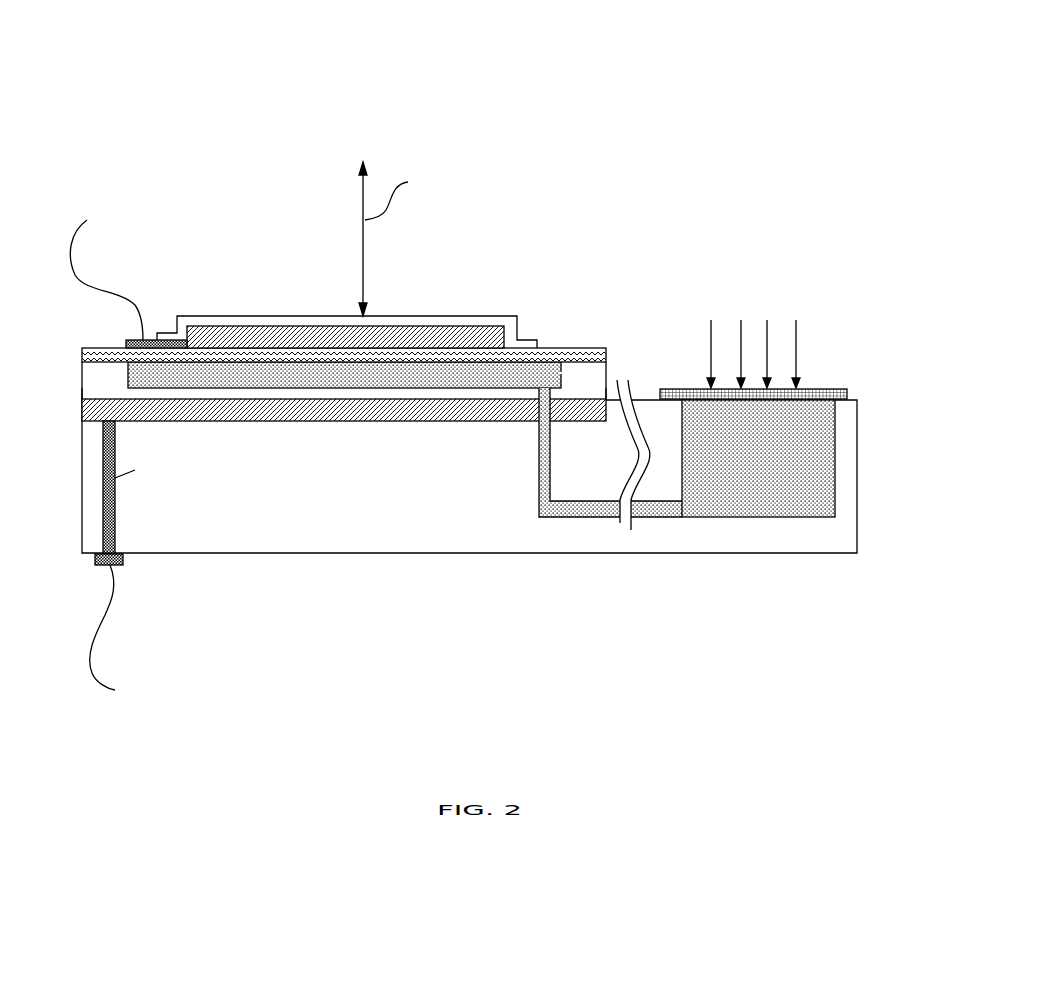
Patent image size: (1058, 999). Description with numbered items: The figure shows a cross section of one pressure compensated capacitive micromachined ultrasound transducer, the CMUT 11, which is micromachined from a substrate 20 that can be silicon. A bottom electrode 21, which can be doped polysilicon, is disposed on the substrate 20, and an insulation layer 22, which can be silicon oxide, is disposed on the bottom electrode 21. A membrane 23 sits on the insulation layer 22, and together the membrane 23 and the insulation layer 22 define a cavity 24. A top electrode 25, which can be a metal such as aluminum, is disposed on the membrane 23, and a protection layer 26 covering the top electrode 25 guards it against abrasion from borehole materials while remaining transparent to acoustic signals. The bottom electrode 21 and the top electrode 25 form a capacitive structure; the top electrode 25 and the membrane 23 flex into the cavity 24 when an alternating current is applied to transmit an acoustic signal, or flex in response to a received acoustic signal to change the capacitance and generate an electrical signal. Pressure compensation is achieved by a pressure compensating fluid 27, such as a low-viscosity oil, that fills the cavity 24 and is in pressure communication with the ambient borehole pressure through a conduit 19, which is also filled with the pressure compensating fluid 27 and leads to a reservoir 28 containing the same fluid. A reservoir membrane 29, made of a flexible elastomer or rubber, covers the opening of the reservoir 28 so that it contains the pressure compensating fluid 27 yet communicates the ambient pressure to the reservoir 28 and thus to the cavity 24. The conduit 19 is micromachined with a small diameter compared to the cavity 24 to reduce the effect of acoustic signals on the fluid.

The CMUT 11 is at (130, 99).
The conduit 19 is at (597, 520).
The substrate 20 is at (177, 547).
The bottom electrode 21 is at (303, 413).
The insulation layer 22 is at (422, 395).
The membrane 23 is at (213, 355).
The cavity 24 is at (492, 388).
The top electrode 25 is at (290, 330).
The protection layer 26 is at (476, 324).
The pressure compensating fluid 27 is at (708, 592).
The reservoir 28 is at (827, 520).
The reservoir membrane 29 is at (835, 388).